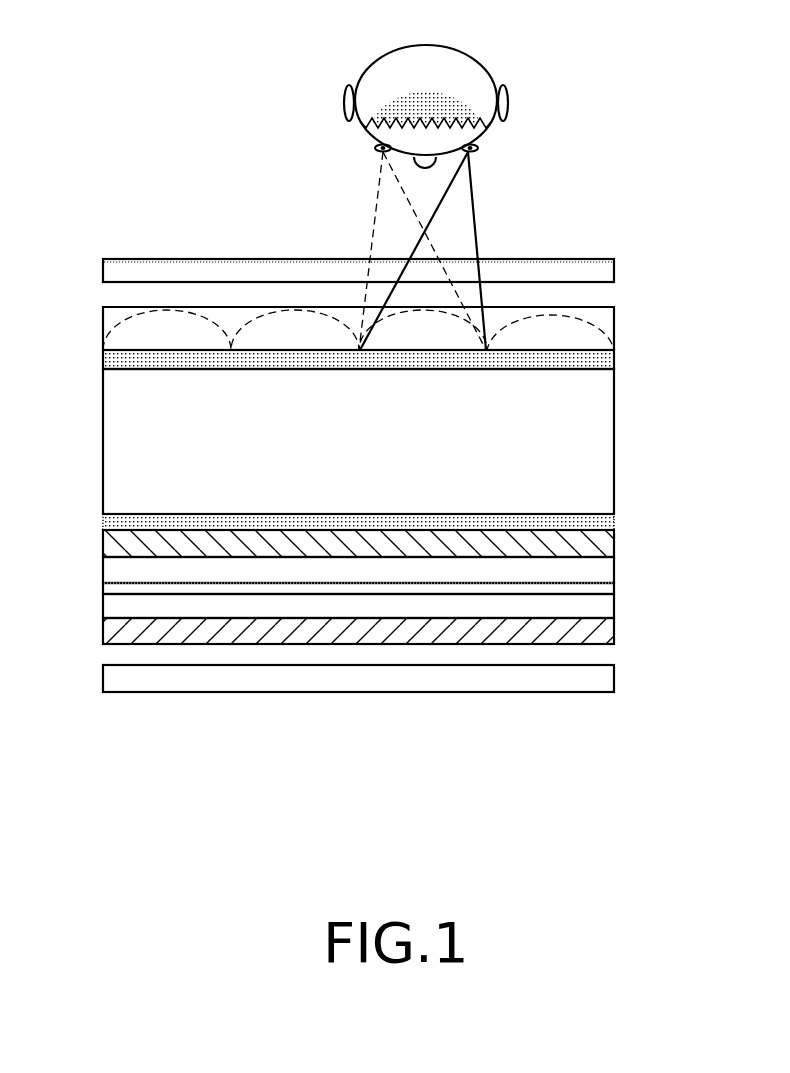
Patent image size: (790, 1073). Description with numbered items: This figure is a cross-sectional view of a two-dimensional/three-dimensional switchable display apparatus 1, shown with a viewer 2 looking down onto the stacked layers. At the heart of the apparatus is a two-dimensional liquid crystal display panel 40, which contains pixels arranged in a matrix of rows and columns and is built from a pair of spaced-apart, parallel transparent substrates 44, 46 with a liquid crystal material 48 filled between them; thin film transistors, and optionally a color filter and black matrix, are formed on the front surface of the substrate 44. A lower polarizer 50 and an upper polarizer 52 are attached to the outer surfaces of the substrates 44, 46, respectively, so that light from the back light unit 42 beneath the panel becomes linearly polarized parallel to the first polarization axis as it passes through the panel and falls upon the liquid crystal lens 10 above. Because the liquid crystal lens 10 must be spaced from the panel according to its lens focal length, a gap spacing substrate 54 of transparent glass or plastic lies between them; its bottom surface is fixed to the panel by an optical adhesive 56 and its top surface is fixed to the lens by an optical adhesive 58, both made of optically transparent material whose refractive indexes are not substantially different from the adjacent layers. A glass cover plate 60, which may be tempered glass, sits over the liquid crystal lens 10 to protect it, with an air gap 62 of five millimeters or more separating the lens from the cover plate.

The 2D/3D switchable display apparatus 1 is at (158, 218).
The viewer 2 is at (478, 74).
The liquid crystal lens 10 is at (606, 322).
The 2D liquid crystal display panel 40 is at (103, 530).
The back light unit 42 is at (606, 676).
The transparent substrate 44 is at (606, 610).
The transparent substrate 46 is at (606, 570).
The liquid crystal material 48 is at (606, 590).
The lower polarizer 50 is at (606, 636).
The upper polarizer 52 is at (606, 543).
The gap spacing substrate 54 is at (606, 444).
The optical adhesive 56 is at (606, 522).
The optical adhesive 58 is at (606, 356).
The glass cover plate 60 is at (608, 266).
The air gap 62 is at (596, 293).